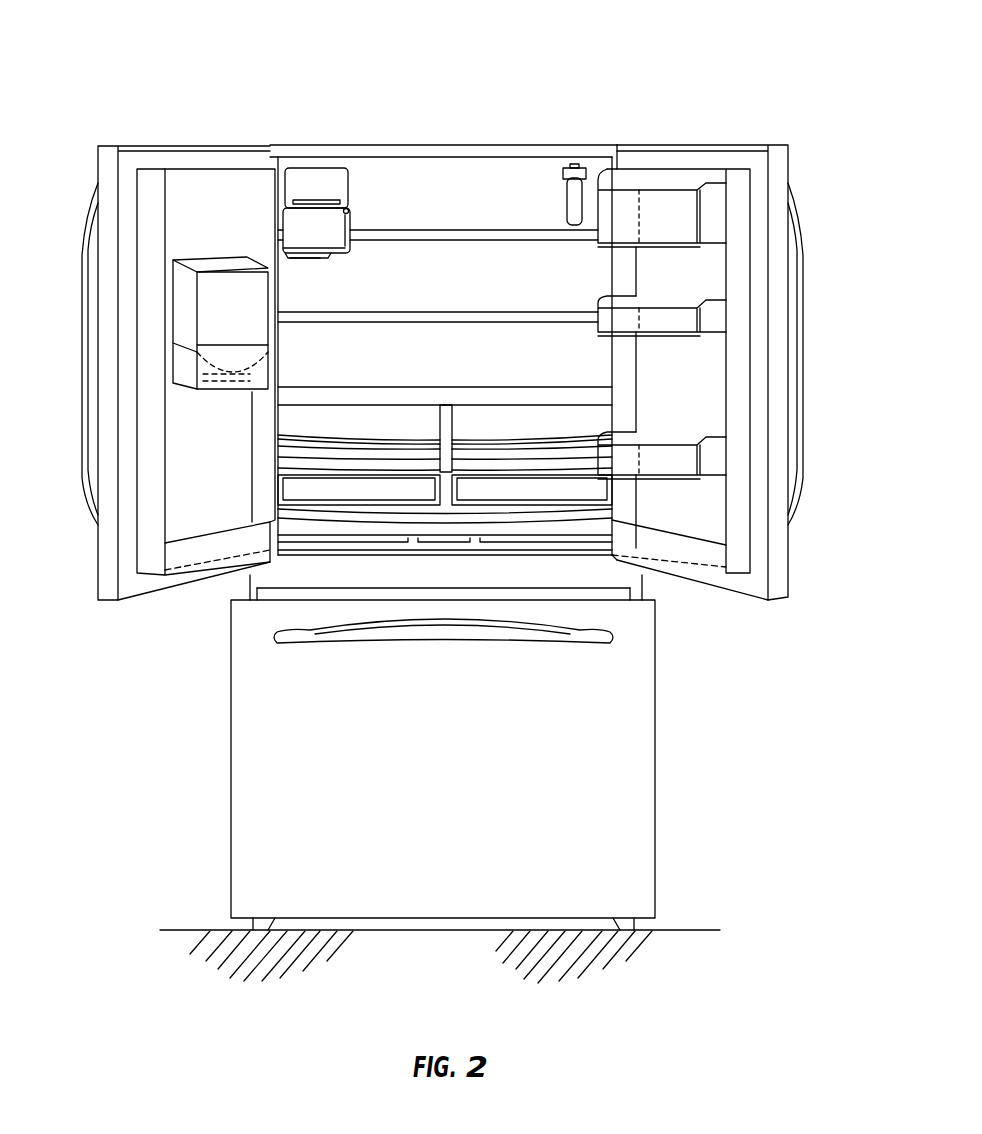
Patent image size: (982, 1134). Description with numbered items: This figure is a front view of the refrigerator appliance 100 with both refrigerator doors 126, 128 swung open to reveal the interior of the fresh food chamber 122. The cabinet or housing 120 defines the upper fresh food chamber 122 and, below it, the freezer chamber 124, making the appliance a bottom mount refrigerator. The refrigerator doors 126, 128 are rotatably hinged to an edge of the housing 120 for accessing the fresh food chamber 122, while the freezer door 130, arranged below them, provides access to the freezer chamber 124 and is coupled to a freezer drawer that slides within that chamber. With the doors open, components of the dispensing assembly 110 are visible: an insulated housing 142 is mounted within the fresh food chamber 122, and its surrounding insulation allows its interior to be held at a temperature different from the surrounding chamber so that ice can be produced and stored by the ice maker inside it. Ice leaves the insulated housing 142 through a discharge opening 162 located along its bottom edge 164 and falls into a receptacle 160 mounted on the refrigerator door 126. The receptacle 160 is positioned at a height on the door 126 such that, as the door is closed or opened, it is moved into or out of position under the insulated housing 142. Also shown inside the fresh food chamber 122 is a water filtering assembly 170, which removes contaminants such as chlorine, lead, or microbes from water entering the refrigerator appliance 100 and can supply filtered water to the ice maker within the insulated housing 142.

The refrigerator appliance 100 is at (432, 468).
The dispensing assembly 110 is at (267, 215).
The cabinet or housing 120 is at (231, 830).
The fresh food chamber 122 is at (445, 197).
The freezer chamber 124 is at (618, 705).
The refrigerator door 126 is at (140, 146).
The refrigerator door 128 is at (697, 144).
The freezer door 130 is at (625, 803).
The insulated housing 142 is at (312, 185).
The receptacle 160 is at (230, 287).
The discharge opening 162 is at (327, 260).
The bottom edge 164 is at (312, 260).
The water filtering assembly 170 is at (562, 193).